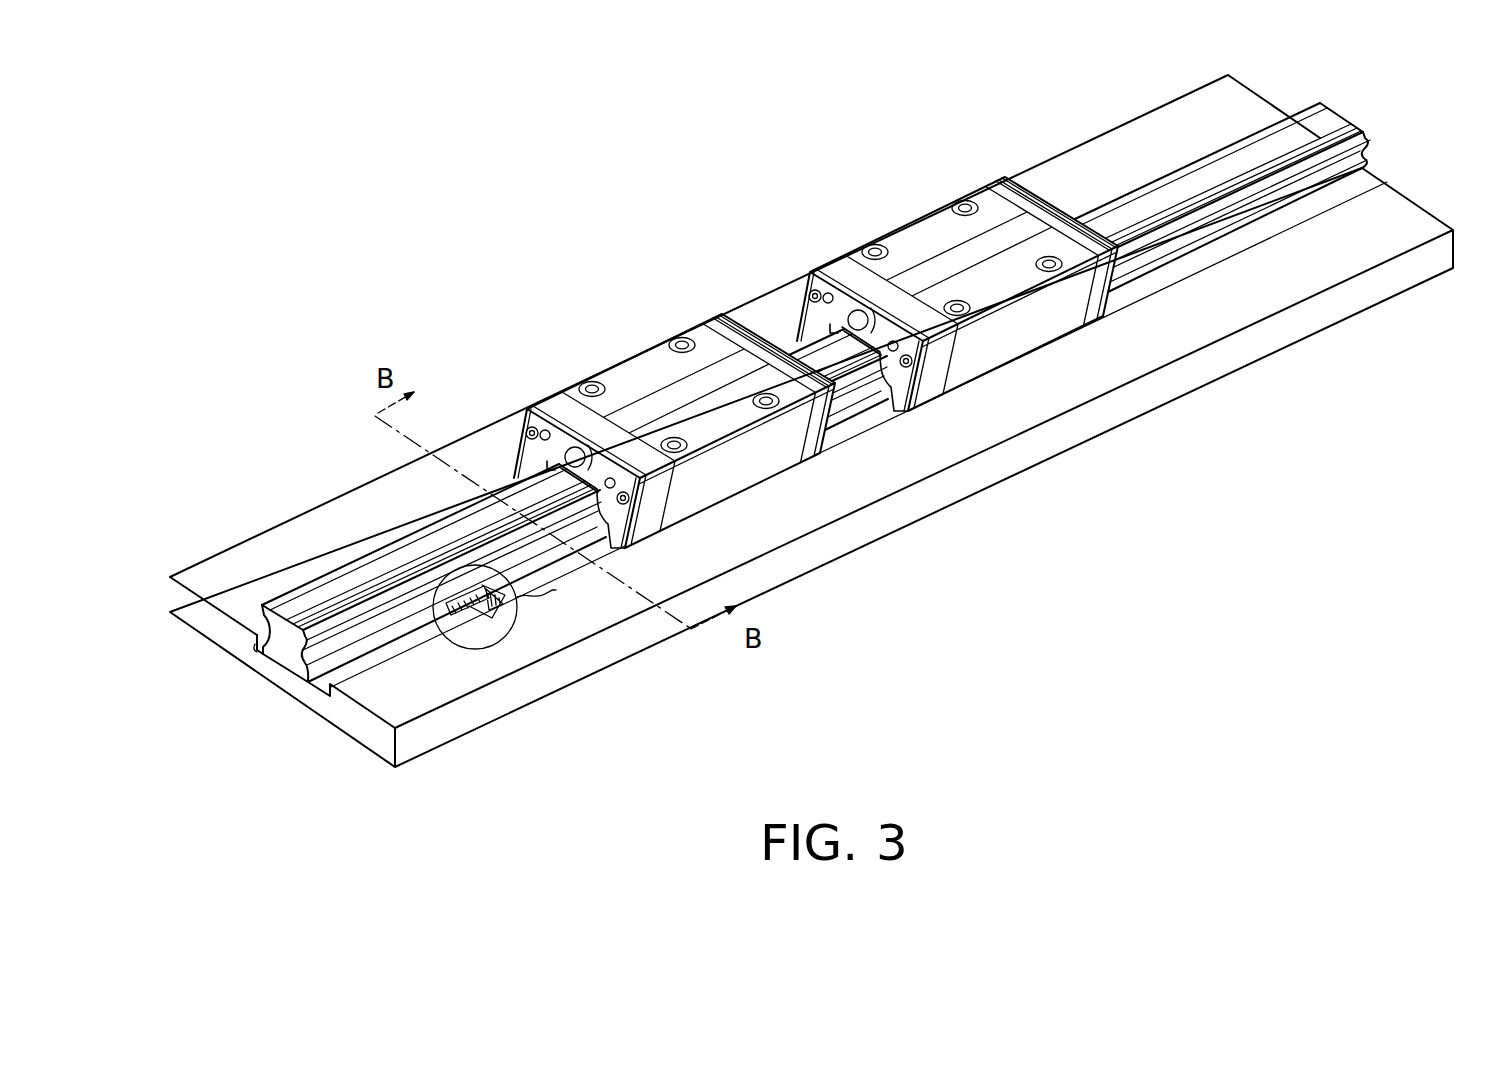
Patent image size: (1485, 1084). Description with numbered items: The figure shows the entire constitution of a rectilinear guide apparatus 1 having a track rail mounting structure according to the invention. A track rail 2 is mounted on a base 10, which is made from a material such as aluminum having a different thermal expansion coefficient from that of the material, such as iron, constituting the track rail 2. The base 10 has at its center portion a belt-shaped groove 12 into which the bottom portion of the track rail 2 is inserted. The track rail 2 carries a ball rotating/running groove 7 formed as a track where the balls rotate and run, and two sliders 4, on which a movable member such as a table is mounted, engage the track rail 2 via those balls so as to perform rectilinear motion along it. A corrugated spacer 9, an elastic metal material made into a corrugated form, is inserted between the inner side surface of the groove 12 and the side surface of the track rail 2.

The rectilinear guide apparatus 1 is at (764, 250).
The track rail 2 is at (824, 444).
The slider 4 is at (653, 368).
The ball rotating/running groove 7 is at (327, 574).
The corrugated spacer 9 is at (468, 596).
The base 10 is at (252, 568).
The belt-shaped groove 12 is at (260, 653).